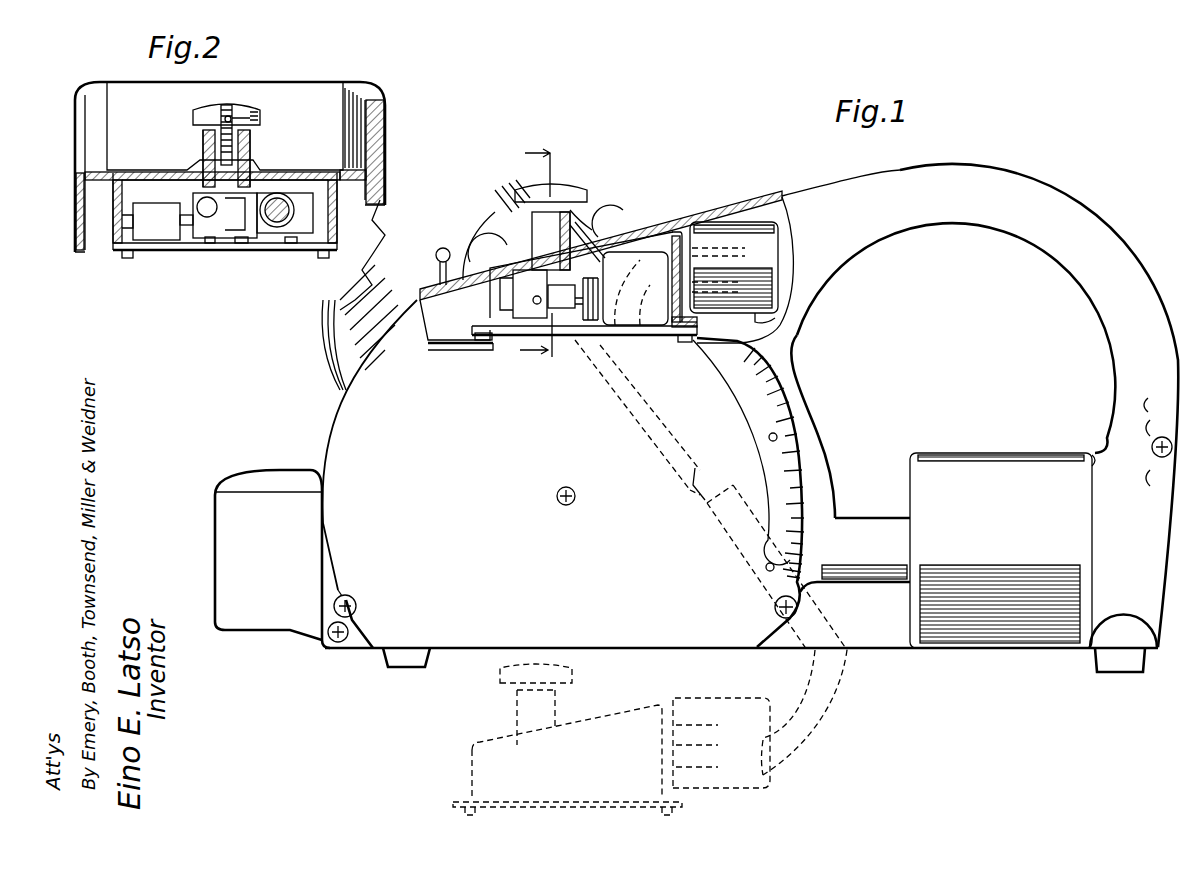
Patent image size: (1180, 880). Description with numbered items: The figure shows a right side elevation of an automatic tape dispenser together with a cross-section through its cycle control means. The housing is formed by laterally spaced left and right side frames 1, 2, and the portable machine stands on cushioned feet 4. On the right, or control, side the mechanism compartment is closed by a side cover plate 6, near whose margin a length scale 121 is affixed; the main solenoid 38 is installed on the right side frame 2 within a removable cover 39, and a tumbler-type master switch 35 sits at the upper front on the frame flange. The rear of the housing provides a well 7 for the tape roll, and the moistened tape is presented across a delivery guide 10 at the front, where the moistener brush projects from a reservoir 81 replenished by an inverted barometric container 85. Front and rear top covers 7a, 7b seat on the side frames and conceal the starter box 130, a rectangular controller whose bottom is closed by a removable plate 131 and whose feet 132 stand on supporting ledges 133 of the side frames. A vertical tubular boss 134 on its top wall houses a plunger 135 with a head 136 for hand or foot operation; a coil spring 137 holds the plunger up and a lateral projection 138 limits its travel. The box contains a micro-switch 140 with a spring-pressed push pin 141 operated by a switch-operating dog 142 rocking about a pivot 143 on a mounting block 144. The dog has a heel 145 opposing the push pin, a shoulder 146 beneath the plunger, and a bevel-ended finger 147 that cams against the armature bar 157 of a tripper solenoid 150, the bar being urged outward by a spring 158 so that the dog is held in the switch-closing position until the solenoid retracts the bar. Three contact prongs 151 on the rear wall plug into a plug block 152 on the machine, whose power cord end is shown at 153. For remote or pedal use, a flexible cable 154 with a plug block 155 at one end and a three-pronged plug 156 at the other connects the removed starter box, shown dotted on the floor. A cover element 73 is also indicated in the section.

In FIG. 2, the left side frame 1 is at (85, 120).
In FIG. 1, the left side frame 1 is at (985, 172).
In FIG. 2, the right side frame 2 is at (366, 150).
In FIG. 1, the right side frame 2 is at (532, 253).
In FIG. 1, the cushioned feet 4 is at (395, 660).
In FIG. 1, the side cover plate 6 is at (500, 640).
In FIG. 1, the well 7 is at (1066, 302).
In FIG. 1, the front top cover 7a is at (470, 262).
In FIG. 1, the rear top cover 7b is at (730, 205).
In FIG. 1, the delivery guide 10 is at (275, 480).
In FIG. 1, the master switch 35 is at (436, 270).
In FIG. 1, the solenoid 38 is at (1042, 445).
In FIG. 1, the removable cover 39 is at (1080, 510).
In FIG. 2, the cover 73 is at (127, 88).
In FIG. 1, the reservoir 81 is at (290, 620).
In FIG. 1, the container 85 is at (335, 318).
In FIG. 1, the scale 121 is at (730, 382).
In FIG. 2, the starter box 130 is at (108, 250).
In FIG. 1, the starter box 130 is at (484, 304).
In FIG. 2, the removable plate 131 is at (178, 252).
In FIG. 1, the removable plate 131 is at (505, 338).
In FIG. 2, the feet 132 is at (125, 262).
In FIG. 1, the feet 132 is at (470, 340).
In FIG. 1, the supporting ledges 133 is at (472, 352).
In FIG. 2, the tubular boss 134 is at (204, 152).
In FIG. 1, the tubular boss 134 is at (532, 232).
In FIG. 2, the plunger 135 is at (222, 136).
In FIG. 1, the plunger 135 is at (590, 202).
In FIG. 2, the head 136 is at (215, 110).
In FIG. 1, the head 136 is at (578, 192).
In FIG. 2, the coil spring 137 is at (242, 130).
In FIG. 1, the coil spring 137 is at (552, 200).
In FIG. 2, the lateral projection 138 is at (195, 197).
In FIG. 2, the micro-switch 140 is at (165, 232).
In FIG. 2, the push pin 141 is at (195, 240).
In FIG. 1, the push pin 141 is at (548, 300).
In FIG. 2, the switch-operating dog 142 is at (250, 240).
In FIG. 1, the switch-operating dog 142 is at (555, 268).
In FIG. 2, the pivot 143 is at (220, 232).
In FIG. 2, the mounting block 144 is at (156, 221).
In FIG. 1, the mounting block 144 is at (510, 300).
In FIG. 2, the heel 145 is at (212, 244).
In FIG. 2, the shoulder 146 is at (245, 195).
In FIG. 2, the bevel-ended finger 147 is at (292, 240).
In FIG. 1, the tripper solenoid 150 is at (640, 252).
In FIG. 2, the contact prongs 151 is at (282, 204).
In FIG. 1, the contact prongs 151 is at (725, 270).
In FIG. 1, the plug block 152 is at (760, 228).
In FIG. 1, the conductor cord end 153 is at (755, 320).
In FIG. 1, the flexible cable 154 is at (560, 250).
In FIG. 1, the plug block 155 is at (770, 773).
In FIG. 1, the three-pronged plug 156 is at (685, 327).
In FIG. 1, the armature bar 157 is at (590, 322).
In FIG. 1, the spring 158 is at (642, 292).